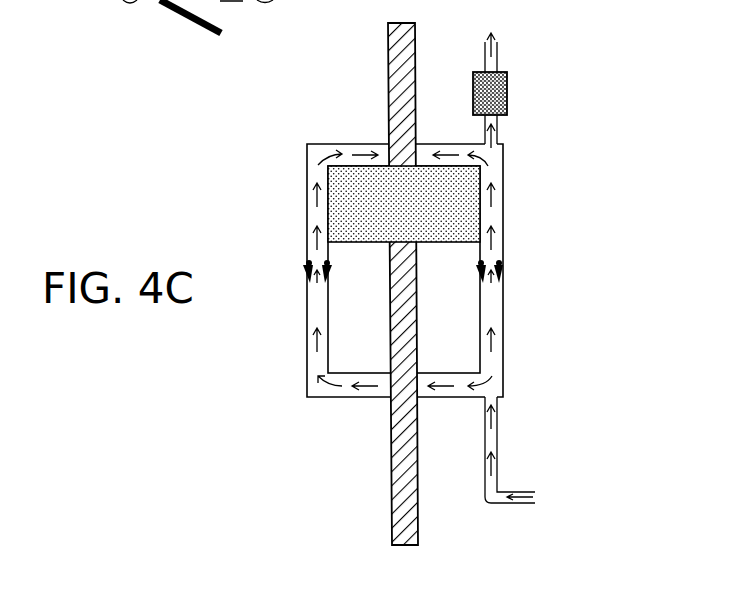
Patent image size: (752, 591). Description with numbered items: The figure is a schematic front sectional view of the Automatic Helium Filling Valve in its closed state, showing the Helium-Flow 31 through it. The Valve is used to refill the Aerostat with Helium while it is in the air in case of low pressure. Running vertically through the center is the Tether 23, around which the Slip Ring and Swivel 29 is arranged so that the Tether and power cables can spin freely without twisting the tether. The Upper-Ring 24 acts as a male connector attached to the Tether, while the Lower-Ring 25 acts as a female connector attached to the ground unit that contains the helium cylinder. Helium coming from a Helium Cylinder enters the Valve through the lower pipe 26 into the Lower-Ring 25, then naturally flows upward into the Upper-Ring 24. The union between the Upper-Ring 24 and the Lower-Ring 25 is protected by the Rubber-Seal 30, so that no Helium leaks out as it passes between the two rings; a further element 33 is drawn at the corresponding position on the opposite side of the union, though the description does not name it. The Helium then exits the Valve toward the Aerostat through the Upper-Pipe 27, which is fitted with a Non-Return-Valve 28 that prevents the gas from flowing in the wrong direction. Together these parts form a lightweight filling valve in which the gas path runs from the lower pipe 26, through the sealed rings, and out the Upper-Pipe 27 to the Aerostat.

The Tether 23 is at (388, 97).
The Upper-Ring 24 is at (503, 190).
The Lower-Ring 25 is at (503, 318).
The lower pipe 26 is at (498, 428).
The Upper-Pipe 27 is at (498, 51).
The Non-Return-Valve 28 is at (507, 90).
The Slip Ring and Swivel 29 is at (433, 223).
The Rubber-Seal 30 is at (306, 263).
The Helium-Flow 31 is at (307, 387).
The right check valve 33 is at (503, 275).